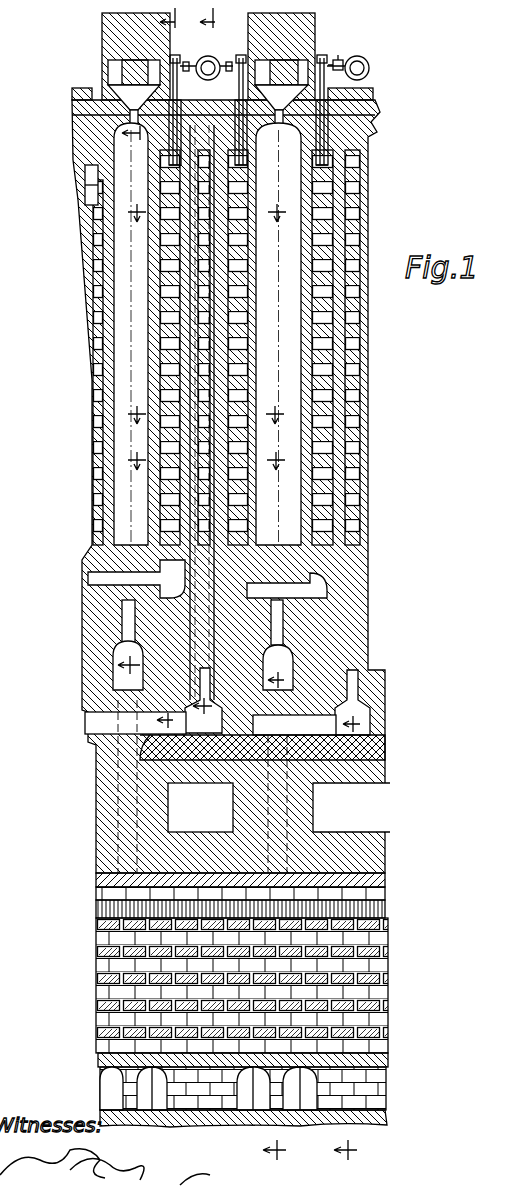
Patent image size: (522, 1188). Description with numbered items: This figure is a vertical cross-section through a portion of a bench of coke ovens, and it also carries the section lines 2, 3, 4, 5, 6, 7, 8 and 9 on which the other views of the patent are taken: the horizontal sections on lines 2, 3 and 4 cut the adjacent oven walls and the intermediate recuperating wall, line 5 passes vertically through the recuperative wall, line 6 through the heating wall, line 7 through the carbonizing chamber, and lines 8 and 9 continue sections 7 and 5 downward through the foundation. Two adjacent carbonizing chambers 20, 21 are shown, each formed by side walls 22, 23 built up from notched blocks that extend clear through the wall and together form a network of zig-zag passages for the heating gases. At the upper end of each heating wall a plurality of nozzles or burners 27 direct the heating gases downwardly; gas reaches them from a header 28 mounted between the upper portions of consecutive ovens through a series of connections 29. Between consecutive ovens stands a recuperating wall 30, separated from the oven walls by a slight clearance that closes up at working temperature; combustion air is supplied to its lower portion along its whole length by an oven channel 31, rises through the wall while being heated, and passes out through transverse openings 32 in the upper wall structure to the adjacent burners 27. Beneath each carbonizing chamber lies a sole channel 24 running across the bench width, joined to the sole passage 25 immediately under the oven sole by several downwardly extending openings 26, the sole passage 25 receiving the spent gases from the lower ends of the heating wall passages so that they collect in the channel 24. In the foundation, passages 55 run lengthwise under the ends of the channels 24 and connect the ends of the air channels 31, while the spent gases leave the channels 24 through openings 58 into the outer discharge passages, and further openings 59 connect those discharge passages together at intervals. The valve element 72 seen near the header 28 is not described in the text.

The section line 2- 2 is at (204, 212).
The section line 3- 3 is at (203, 414).
The section line 4- 4 is at (204, 460).
The section line 5- 5 is at (209, 369).
The section line 6- 6 is at (173, 373).
The section line 7- 7 is at (135, 404).
The section line 8- 8 is at (274, 916).
The section line 9- 9 is at (347, 938).
The carbonizing chamber 20 is at (123, 339).
The carbonizing chamber 21 is at (292, 365).
The side wall 22 is at (100, 380).
The side wall 23 is at (168, 382).
The sole channel 24 is at (118, 650).
The sole passage 25 is at (115, 588).
The downwardly extending opening 26 is at (128, 605).
The nozzle or burner 27 is at (170, 158).
The header 28 is at (212, 62).
The connection 29 is at (158, 76).
The recuperating wall 30 is at (105, 505).
The oven channel 31 is at (183, 730).
The transverse opening 32 is at (157, 115).
The passage 55 is at (95, 718).
The opening 58 is at (130, 1110).
The opening 59 is at (179, 1112).
The valve 72 is at (338, 58).